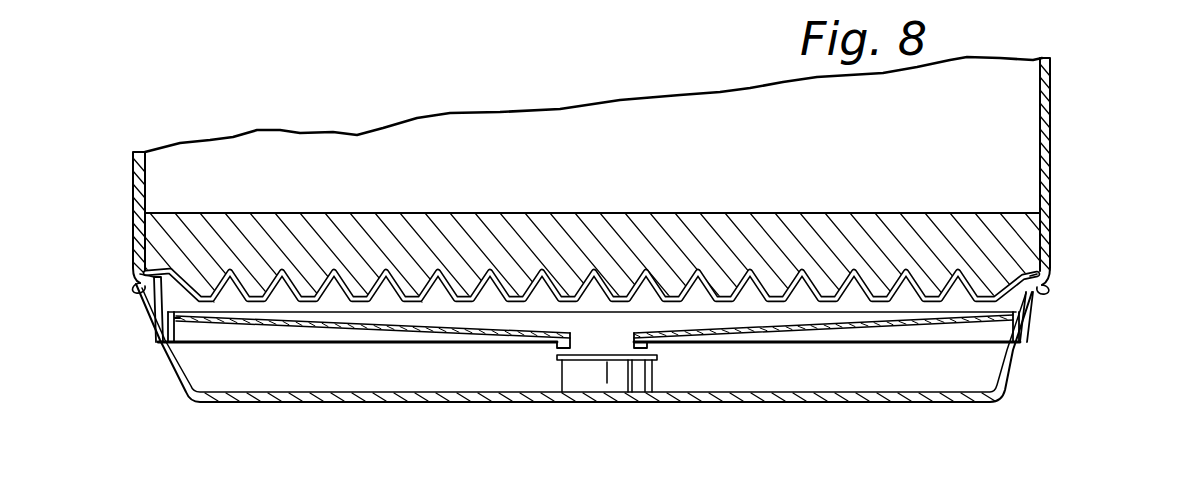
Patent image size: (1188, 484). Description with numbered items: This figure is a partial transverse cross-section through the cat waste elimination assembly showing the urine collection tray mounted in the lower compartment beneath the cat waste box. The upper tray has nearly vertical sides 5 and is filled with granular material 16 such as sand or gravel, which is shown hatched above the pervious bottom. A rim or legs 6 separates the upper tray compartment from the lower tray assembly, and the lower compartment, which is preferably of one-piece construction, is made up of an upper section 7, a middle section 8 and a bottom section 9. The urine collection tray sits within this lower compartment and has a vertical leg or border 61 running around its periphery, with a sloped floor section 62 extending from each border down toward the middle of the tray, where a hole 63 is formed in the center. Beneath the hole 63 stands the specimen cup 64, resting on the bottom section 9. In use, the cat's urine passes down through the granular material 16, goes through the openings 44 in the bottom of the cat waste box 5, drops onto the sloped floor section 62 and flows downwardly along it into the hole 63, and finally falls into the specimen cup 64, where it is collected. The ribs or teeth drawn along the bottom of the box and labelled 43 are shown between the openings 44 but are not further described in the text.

The sides of upper tray 5 is at (1051, 129).
The granular material 16 is at (660, 226).
The rim or legs 6 is at (140, 274).
The upper section 7 is at (138, 286).
The middle section 8 is at (153, 328).
The bottom section 9 is at (178, 370).
The ribs 43 is at (465, 301).
The openings 44 is at (207, 302).
The vertical leg or border 61 is at (208, 338).
The sloped floor section 62 is at (347, 334).
The hole 63 is at (613, 340).
The specimen cup 64 is at (563, 378).